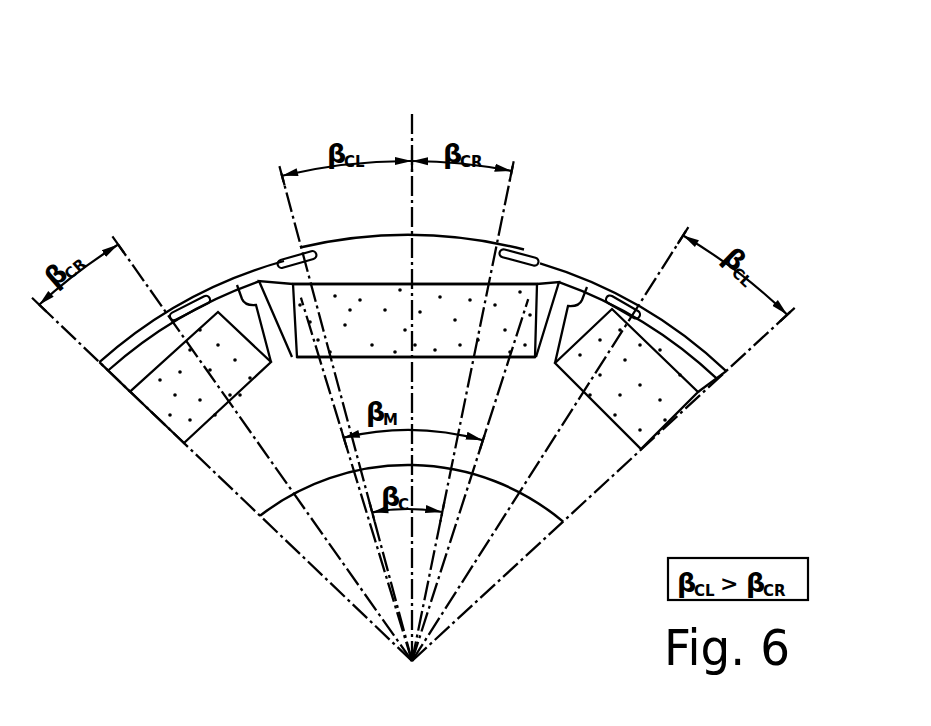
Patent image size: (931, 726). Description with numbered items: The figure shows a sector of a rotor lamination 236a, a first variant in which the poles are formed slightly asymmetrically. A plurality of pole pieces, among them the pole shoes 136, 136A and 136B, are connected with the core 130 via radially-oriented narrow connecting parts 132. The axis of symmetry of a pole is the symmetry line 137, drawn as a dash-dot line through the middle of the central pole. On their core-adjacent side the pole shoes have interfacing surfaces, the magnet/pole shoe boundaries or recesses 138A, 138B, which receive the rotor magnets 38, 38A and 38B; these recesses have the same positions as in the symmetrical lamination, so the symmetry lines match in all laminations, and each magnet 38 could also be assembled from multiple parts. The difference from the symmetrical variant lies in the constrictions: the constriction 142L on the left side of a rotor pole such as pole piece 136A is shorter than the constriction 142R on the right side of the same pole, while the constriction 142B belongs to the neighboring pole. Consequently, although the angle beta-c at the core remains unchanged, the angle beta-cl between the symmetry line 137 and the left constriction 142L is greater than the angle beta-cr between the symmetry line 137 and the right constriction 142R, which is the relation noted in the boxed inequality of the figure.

The symmetry line 137 is at (418, 124).
The radially-oriented narrow connecting parts 132 is at (234, 283).
The core 130 is at (590, 484).
The pole shoe 136 is at (160, 356).
The pole piece 136A is at (485, 274).
The pole piece 136B is at (707, 364).
The magnet 38 is at (200, 396).
The rotor magnet 38A is at (475, 338).
The rotor magnet 38B is at (677, 406).
The interfacing surface / recess 138A is at (352, 289).
The interfacing surface / recess 138B is at (372, 358).
The left constriction 142L is at (296, 258).
The right constriction 142R is at (533, 263).
The constriction 142B is at (213, 280).
The rotor lamination 236a is at (708, 222).